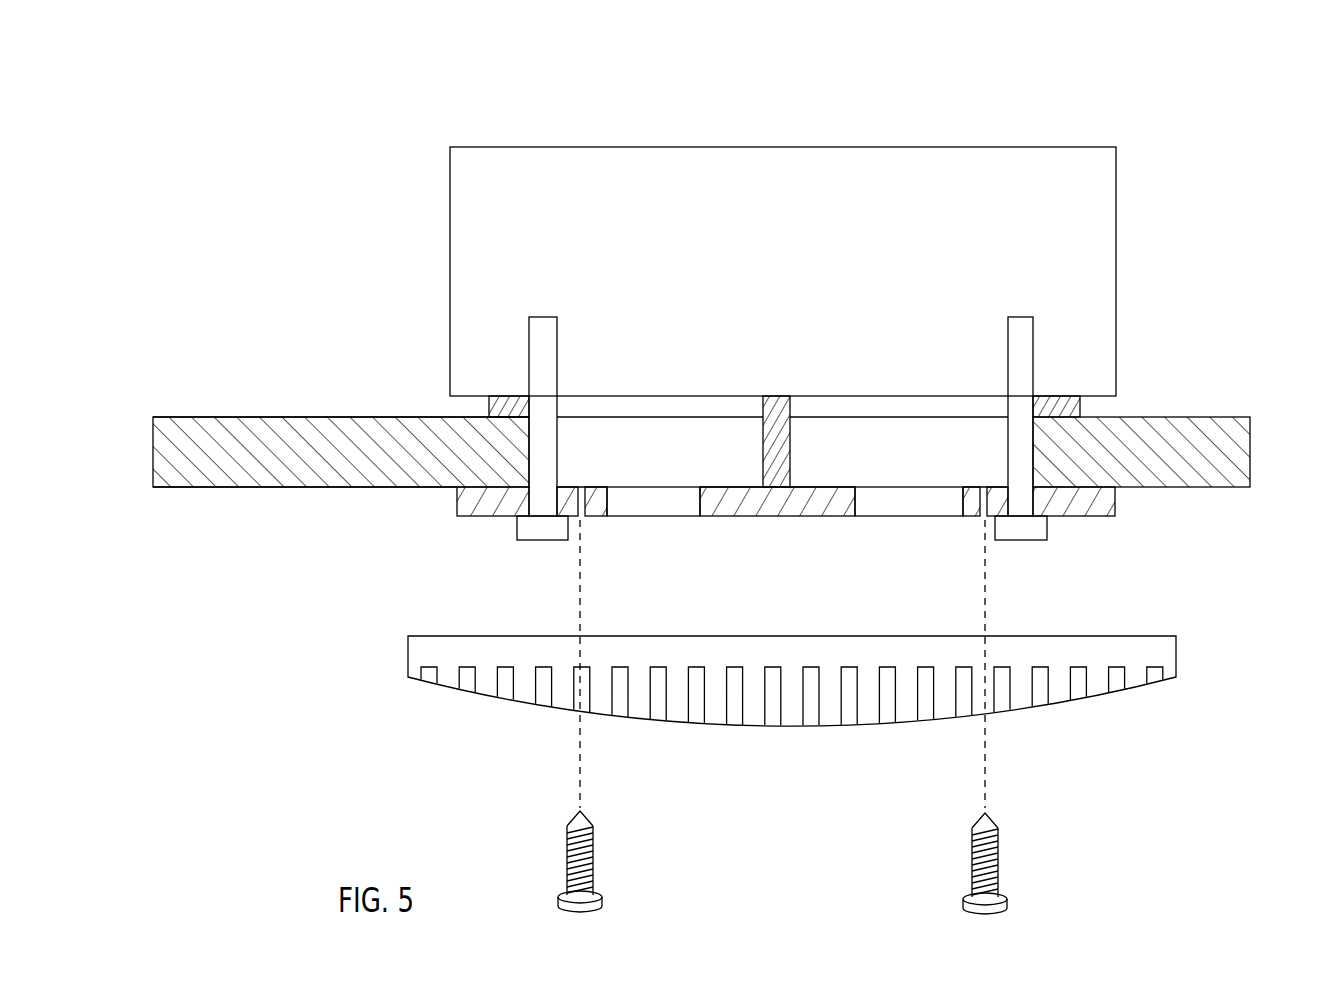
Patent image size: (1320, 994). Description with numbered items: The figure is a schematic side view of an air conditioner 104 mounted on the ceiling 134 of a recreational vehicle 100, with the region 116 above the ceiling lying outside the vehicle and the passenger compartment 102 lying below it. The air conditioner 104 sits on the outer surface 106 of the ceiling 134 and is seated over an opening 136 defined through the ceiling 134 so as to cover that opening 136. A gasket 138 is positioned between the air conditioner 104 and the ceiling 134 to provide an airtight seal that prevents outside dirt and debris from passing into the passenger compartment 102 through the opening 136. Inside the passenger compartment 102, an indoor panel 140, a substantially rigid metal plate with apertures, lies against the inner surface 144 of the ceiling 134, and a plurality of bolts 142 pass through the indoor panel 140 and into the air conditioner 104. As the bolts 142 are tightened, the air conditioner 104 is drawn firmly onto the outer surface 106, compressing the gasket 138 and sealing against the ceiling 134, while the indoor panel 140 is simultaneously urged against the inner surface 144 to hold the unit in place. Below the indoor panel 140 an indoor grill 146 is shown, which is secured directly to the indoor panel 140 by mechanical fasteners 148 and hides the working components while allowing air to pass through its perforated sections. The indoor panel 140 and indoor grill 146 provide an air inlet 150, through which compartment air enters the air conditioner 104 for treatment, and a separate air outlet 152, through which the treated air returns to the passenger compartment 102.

The recreational vehicle 100 is at (283, 160).
The passenger compartment 102 is at (358, 739).
The air conditioner 104 is at (814, 284).
The outer surface 106 is at (240, 413).
The upper region 116 is at (1041, 99).
The ceiling 134 is at (364, 469).
The opening 136 is at (977, 414).
The gasket 138 is at (1080, 410).
The indoor panel 140 is at (745, 517).
The bolts 142 is at (542, 440).
The inner surface 144 is at (240, 491).
The indoor grill 146 is at (792, 697).
The mechanical fasteners 148 is at (593, 860).
The air inlet 150 is at (936, 522).
The air outlet 152 is at (626, 522).